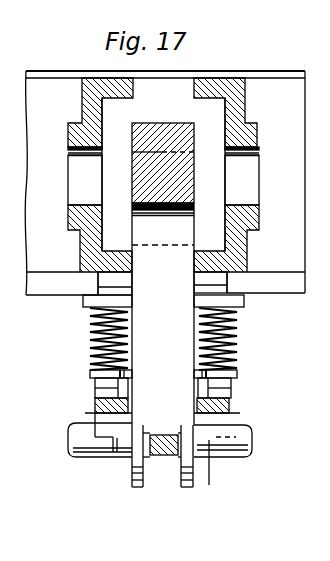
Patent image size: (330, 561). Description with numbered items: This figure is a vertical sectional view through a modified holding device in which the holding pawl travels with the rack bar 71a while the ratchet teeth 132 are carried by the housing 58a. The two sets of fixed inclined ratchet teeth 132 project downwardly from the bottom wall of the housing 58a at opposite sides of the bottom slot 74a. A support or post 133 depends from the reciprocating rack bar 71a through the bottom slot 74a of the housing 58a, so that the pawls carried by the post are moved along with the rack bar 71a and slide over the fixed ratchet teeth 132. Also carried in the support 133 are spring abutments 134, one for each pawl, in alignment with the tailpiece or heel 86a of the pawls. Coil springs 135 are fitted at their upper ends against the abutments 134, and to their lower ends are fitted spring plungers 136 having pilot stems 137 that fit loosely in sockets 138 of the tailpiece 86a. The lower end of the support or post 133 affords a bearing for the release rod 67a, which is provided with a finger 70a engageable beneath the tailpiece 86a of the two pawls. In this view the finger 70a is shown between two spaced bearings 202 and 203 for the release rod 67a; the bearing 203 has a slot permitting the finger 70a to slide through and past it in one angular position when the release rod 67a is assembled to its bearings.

The housing 58a is at (237, 113).
The rack bar 71a is at (185, 192).
The bottom slot 74a is at (190, 268).
The ratchet teeth 132 is at (113, 277).
The support or post 133 is at (174, 329).
The spring abutments 134 is at (90, 304).
The coil springs 135 is at (95, 347).
The spring plungers 136 is at (95, 375).
The pilot stems 137 is at (97, 387).
The sockets 138 is at (97, 402).
The release rod 67a is at (83, 460).
The finger 70a is at (160, 458).
The tailpiece or heel 86a is at (118, 463).
The bearing 202 is at (189, 488).
The bearing 203 is at (137, 489).